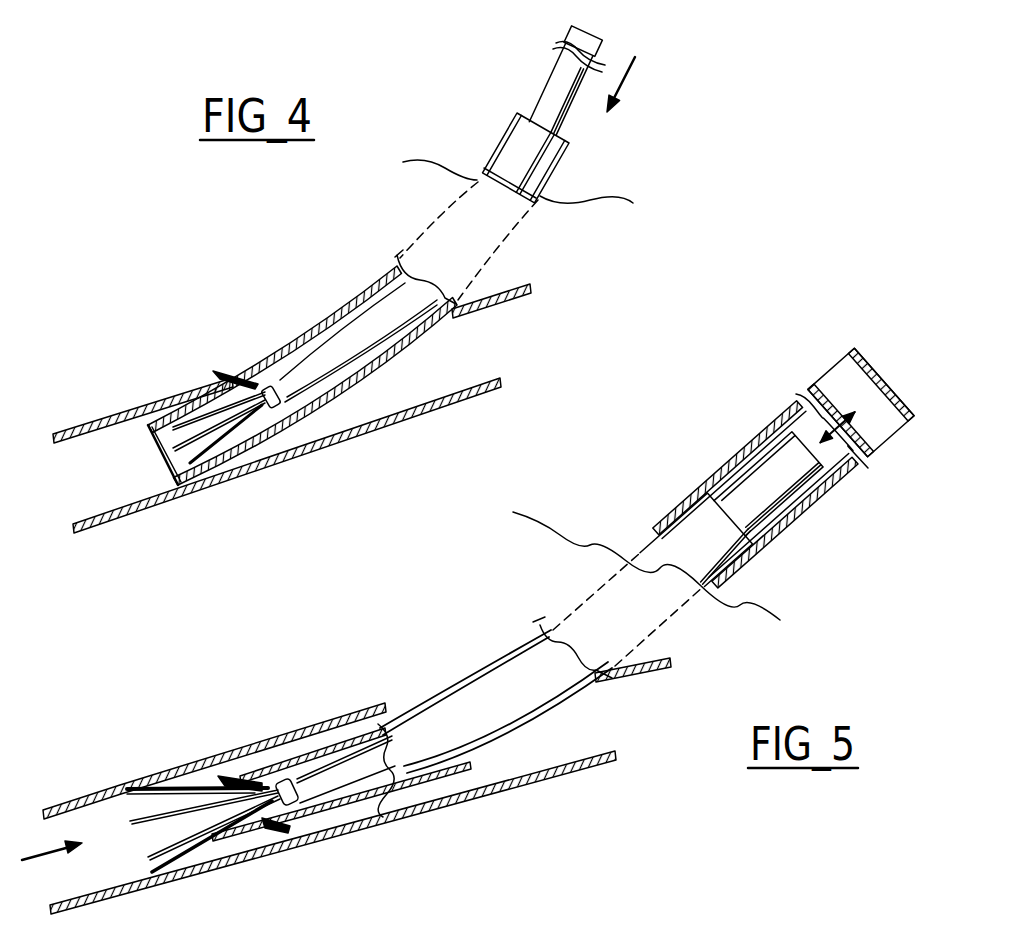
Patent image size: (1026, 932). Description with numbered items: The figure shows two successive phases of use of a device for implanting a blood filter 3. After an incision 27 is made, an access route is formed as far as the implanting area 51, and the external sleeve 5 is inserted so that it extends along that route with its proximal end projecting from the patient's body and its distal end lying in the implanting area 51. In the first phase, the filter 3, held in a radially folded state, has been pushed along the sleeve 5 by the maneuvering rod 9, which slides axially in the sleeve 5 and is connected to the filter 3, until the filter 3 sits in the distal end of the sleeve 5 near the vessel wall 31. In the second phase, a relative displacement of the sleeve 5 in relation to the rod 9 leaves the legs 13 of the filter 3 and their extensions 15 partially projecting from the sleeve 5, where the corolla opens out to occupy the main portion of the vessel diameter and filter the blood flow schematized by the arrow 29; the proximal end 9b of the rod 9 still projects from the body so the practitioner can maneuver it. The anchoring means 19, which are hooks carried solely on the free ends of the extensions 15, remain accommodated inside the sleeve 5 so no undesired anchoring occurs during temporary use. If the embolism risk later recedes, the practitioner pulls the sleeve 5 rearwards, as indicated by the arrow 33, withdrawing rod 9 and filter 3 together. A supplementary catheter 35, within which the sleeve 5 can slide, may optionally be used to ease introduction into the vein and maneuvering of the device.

In FIG. 4, the blood filter 3 is at (204, 462).
In FIG. 5, the blood filter 3 is at (220, 770).
In FIG. 4, the external sleeve 5 is at (548, 163).
In FIG. 4, the maneuvering rod 9 is at (565, 100).
In FIG. 5, the maneuvering rod 9 is at (362, 767).
In FIG. 4, the proximal end of the maneuvering rod 9b is at (592, 42).
In FIG. 5, the legs 13 is at (157, 848).
In FIG. 5, the extensions 15 is at (176, 786).
In FIG. 5, the anchoring means 19 is at (281, 820).
In FIG. 4, the incision 27 is at (470, 180).
In FIG. 5, the arrow schematizing blood flow 29 is at (33, 853).
In FIG. 4, the vessel wall 31 is at (481, 392).
In FIG. 5, the vessel wall 31 is at (346, 715).
In FIG. 5, the arrow indicating withdrawal direction 33 is at (835, 420).
In FIG. 5, the supplementary catheter 35 is at (745, 446).
In FIG. 4, the implanting area 51 is at (110, 460).